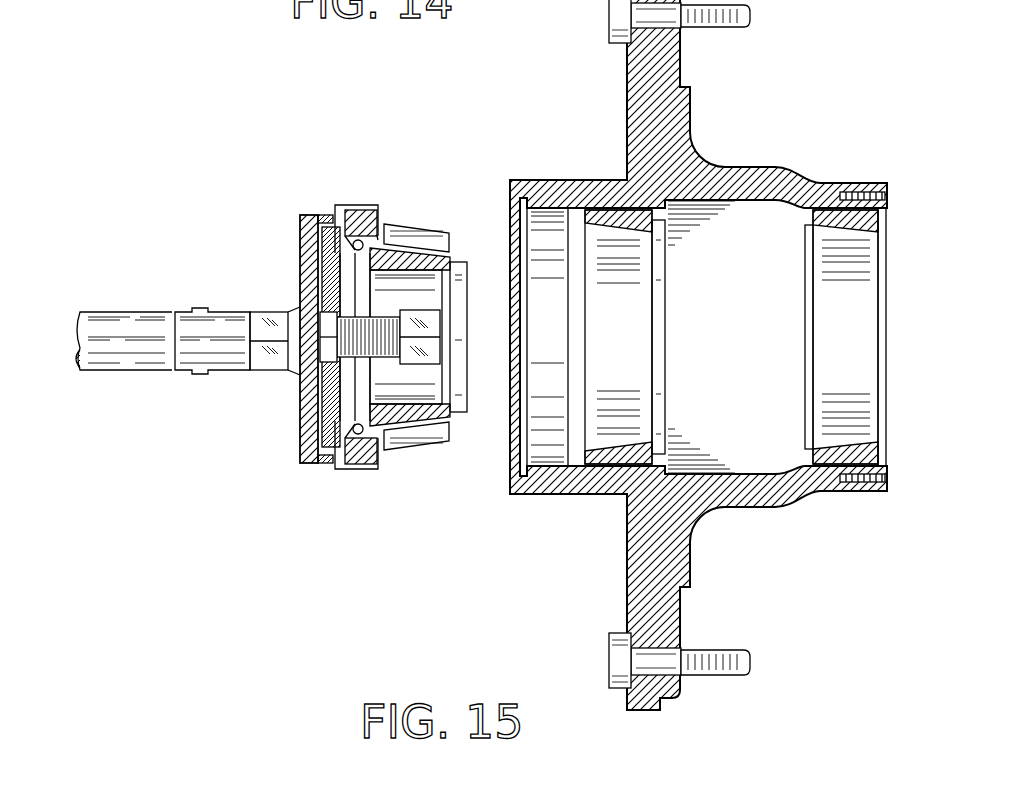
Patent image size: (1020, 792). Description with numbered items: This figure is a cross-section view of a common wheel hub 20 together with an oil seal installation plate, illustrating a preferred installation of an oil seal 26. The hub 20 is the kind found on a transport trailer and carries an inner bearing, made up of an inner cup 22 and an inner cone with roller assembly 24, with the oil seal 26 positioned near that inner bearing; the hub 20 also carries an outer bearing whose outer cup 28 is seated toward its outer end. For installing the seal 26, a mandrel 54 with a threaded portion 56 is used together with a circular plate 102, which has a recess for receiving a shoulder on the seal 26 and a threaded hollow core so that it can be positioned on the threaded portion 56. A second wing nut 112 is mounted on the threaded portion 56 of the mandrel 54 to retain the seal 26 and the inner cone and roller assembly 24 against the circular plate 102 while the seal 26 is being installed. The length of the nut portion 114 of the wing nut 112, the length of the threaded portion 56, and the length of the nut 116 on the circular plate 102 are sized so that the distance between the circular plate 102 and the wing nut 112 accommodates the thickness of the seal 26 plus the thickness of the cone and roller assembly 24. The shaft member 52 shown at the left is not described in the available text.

The wheel hub 20 is at (778, 167).
The inner cup 22 is at (638, 378).
The inner cone with roller assembly 24 is at (425, 223).
The oil seal 26 is at (357, 204).
The outer cup 28 is at (805, 226).
The shaft 52 is at (132, 312).
The mandrel 54 is at (223, 310).
The threaded portion 56 is at (345, 367).
The circular plate 102 is at (318, 213).
The second wing nut 112 is at (466, 292).
The nut portion 114 is at (428, 362).
The nut 116 is at (268, 368).